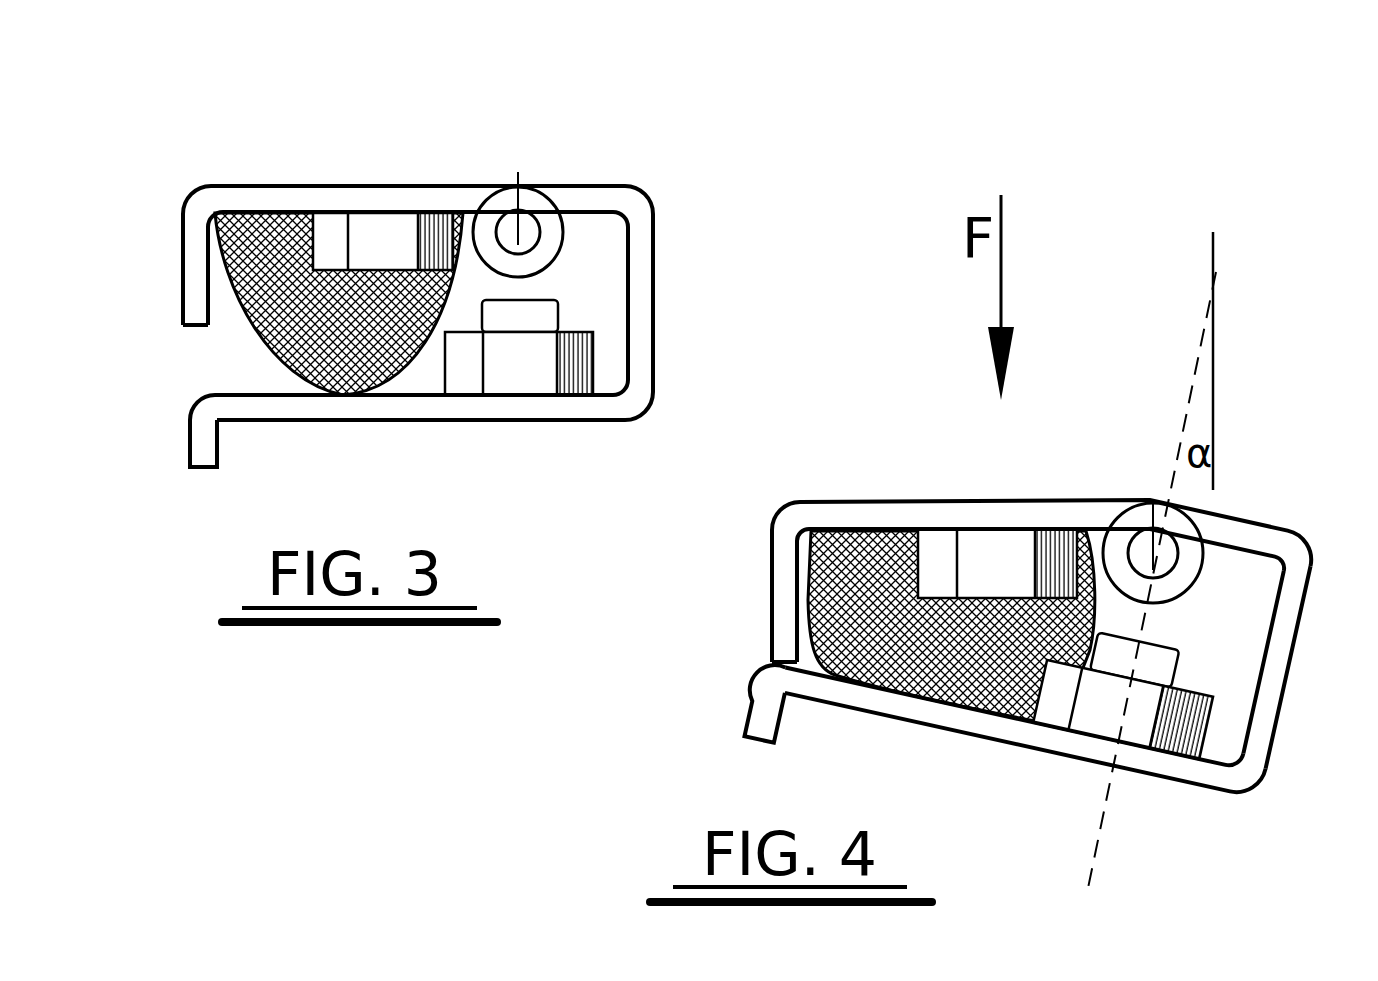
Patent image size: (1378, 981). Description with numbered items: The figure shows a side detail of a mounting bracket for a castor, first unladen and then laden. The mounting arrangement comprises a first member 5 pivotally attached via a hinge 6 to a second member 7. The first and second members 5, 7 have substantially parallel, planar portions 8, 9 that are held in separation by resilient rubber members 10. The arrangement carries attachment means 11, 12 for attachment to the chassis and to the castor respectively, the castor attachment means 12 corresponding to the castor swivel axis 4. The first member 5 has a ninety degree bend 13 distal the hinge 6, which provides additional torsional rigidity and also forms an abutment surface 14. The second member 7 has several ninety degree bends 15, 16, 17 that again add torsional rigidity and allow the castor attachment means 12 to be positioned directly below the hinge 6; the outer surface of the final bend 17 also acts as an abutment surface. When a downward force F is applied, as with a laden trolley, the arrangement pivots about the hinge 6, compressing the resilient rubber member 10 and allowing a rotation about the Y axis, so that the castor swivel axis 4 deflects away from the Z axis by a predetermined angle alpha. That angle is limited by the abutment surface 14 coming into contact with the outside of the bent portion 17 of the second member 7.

In FIG. 4, the castor swivel axis 4 is at (1100, 810).
In FIG. 3, the first member 5 is at (178, 262).
In FIG. 3, the hinge 6 is at (523, 228).
In FIG. 4, the hinge 6 is at (1128, 517).
In FIG. 3, the second member 7 is at (657, 270).
In FIG. 4, the second member 7 is at (1273, 680).
In FIG. 3, the planar portion 8 is at (238, 183).
In FIG. 3, the planar portion 9 is at (270, 405).
In FIG. 3, the resilient rubber member 10 is at (278, 240).
In FIG. 4, the resilient rubber member 10 is at (858, 540).
In FIG. 3, the attachment means 11 is at (385, 235).
In FIG. 3, the attachment means 12 is at (505, 370).
In FIG. 3, the 90 degree bend 13 is at (190, 198).
In FIG. 3, the abutment surface 14 is at (192, 327).
In FIG. 4, the abutment surface 14 is at (770, 656).
In FIG. 3, the 90 degree bend 15 is at (640, 195).
In FIG. 3, the 90 degree bend 16 is at (630, 395).
In FIG. 3, the 90 degree bend 17 is at (207, 413).
In FIG. 4, the 90 degree bend 17 is at (787, 680).